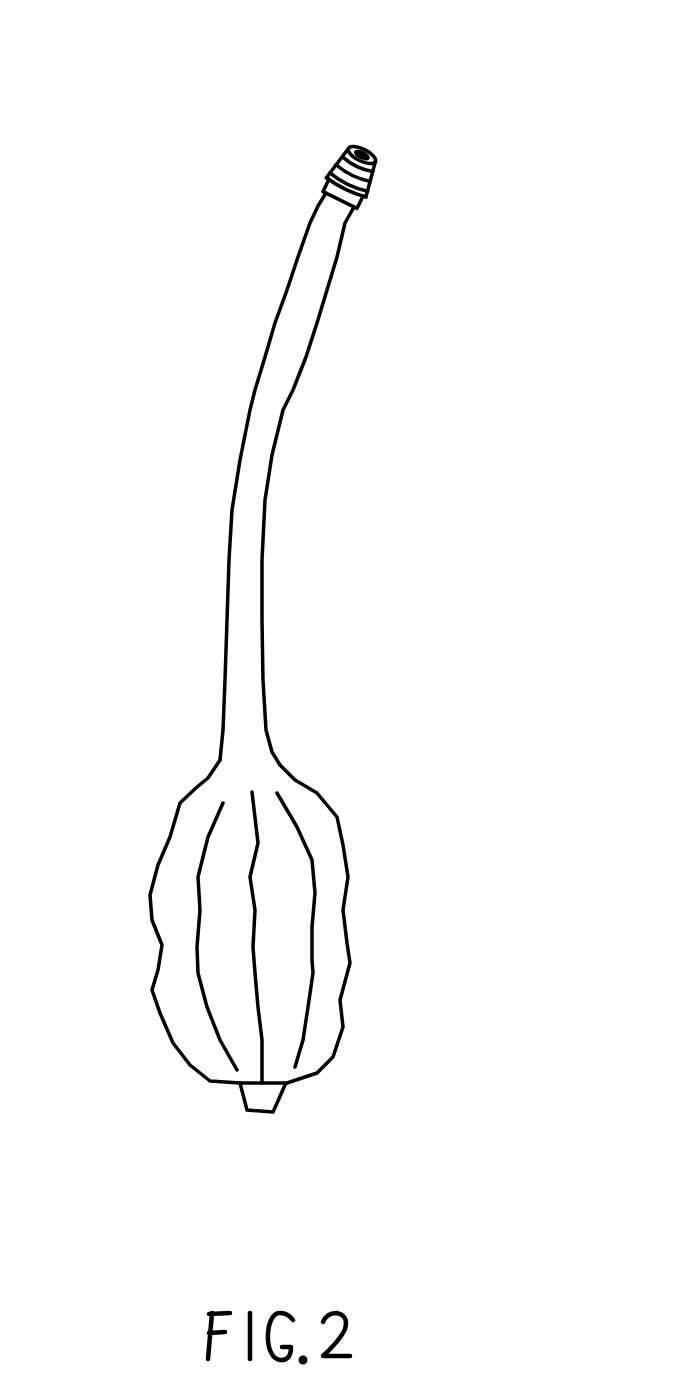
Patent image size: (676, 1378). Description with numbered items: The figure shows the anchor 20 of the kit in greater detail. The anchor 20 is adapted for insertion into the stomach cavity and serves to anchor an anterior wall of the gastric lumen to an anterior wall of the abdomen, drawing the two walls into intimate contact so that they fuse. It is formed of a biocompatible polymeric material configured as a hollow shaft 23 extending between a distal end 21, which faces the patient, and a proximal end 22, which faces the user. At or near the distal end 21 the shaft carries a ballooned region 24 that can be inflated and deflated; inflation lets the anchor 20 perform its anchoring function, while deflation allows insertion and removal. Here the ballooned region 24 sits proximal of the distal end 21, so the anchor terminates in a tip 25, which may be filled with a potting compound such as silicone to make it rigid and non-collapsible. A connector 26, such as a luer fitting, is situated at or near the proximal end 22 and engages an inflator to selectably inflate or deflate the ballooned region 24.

The anchor 20 is at (393, 580).
The distal end 21 is at (227, 1118).
The proximal end 22 is at (397, 192).
The hollow shaft 23 is at (298, 385).
The ballooned region 24 is at (355, 935).
The tip 25 is at (270, 1113).
The connector 26 is at (332, 152).